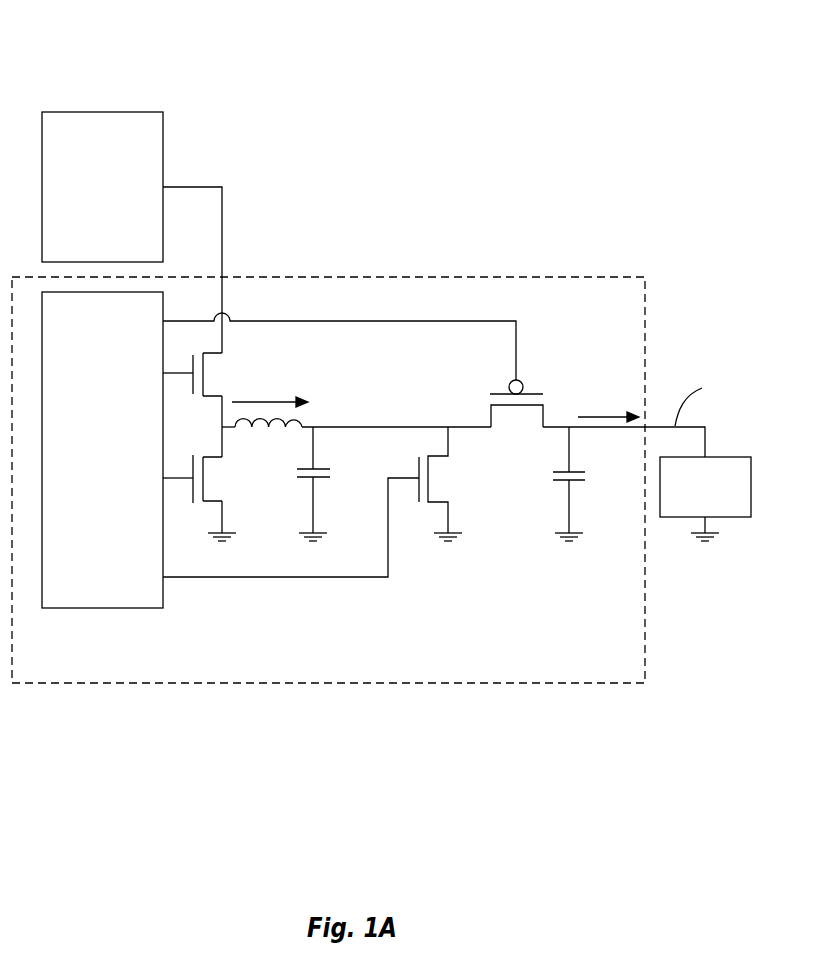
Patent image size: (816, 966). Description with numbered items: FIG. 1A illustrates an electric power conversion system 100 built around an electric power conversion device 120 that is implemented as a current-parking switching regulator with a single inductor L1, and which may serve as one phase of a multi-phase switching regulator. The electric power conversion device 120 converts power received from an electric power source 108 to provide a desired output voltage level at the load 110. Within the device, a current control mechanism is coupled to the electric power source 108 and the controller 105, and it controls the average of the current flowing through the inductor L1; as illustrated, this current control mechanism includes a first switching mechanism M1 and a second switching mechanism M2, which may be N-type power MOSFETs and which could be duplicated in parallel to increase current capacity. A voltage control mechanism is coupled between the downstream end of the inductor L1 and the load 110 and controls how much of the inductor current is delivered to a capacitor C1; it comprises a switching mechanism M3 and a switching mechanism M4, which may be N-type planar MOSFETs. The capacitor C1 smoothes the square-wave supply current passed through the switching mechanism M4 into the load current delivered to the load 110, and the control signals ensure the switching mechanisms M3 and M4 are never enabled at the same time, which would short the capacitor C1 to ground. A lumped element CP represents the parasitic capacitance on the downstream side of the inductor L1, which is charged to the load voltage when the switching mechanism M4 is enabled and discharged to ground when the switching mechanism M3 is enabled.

The electric power conversion system 100 is at (572, 75).
The controller 105 is at (87, 473).
The electric power source 108 is at (86, 233).
The load 110 is at (689, 511).
The electric power conversion device 120 is at (507, 665).
The first switching mechanism M1 is at (212, 374).
The second switching mechanism M2 is at (212, 479).
The switching mechanism M3 is at (440, 484).
The switching mechanism M4 is at (516, 403).
The inductor L1 is at (268, 434).
The parasitic capacitance CP is at (326, 484).
The capacitor C1 is at (583, 484).